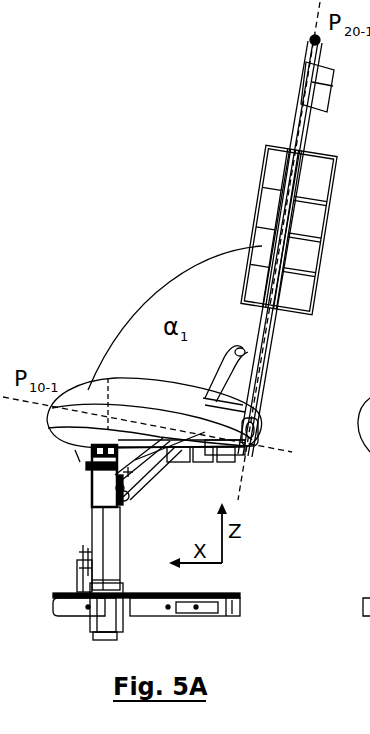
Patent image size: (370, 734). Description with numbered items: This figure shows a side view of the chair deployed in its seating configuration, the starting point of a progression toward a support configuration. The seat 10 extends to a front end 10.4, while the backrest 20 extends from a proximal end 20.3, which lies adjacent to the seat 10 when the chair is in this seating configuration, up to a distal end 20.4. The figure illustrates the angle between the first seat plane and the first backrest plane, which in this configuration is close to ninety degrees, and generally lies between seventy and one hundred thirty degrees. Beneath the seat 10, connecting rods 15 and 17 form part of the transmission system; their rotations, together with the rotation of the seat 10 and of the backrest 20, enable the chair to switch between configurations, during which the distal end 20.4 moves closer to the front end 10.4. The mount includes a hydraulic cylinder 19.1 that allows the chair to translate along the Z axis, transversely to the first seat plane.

The seat 10 is at (88, 442).
The front end 10.4 is at (93, 436).
The connecting rod 15 is at (154, 467).
The connecting rod 17 is at (130, 497).
The hydraulic cylinder 19.1 is at (86, 519).
The backrest 20 is at (288, 128).
The proximal end 20.3 is at (254, 444).
The distal end 20.4 is at (297, 41).